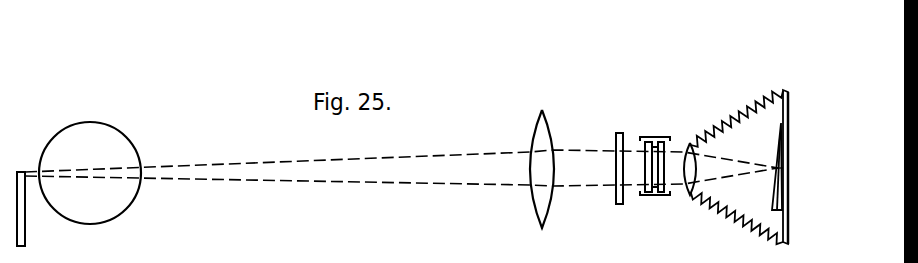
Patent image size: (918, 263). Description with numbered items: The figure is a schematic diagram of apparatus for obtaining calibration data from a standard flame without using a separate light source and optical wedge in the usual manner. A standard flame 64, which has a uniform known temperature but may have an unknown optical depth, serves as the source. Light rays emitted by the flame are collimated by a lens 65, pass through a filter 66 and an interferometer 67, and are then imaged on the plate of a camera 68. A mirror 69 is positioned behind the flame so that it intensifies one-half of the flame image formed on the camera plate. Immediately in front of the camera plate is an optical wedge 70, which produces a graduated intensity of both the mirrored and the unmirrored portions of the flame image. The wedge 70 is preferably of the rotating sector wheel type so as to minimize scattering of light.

The standard flame 64 is at (123, 134).
The lens 65 is at (533, 130).
The filter 66 is at (619, 133).
The interferometer 67 is at (655, 137).
The camera 68 is at (745, 112).
The mirror 69 is at (25, 227).
The optical wedge 70 is at (774, 194).